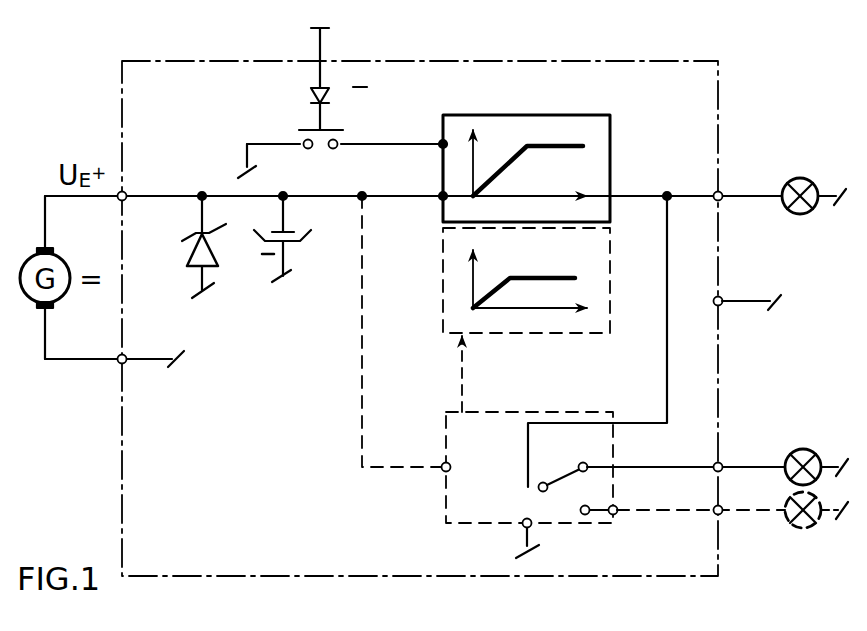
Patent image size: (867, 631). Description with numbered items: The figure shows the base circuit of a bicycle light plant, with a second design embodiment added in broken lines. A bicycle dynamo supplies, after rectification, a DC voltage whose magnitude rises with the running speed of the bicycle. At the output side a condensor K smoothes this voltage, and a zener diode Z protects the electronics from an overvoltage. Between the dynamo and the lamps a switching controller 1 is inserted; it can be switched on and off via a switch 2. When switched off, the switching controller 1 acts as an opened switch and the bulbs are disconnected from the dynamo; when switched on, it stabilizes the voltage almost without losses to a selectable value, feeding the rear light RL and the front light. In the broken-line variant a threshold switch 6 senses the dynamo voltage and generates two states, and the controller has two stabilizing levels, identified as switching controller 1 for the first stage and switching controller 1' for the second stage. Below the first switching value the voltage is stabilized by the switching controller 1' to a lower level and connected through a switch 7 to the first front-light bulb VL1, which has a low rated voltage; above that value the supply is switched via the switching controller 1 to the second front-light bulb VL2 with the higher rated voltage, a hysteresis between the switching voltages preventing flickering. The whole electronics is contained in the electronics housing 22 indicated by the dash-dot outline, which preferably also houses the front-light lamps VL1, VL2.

The switching controller 1 is at (526, 115).
The switching controller 1' is at (612, 320).
The switch 2 is at (333, 80).
The electronics housing 22 is at (556, 60).
The threshold switch 6 is at (478, 525).
The switch 7 is at (578, 503).
The zener diode Z is at (219, 270).
The condensor K is at (296, 258).
The rear light lamp RL is at (813, 181).
The first front light bulb VL1 is at (717, 453).
The second front light bulb VL2 is at (732, 531).